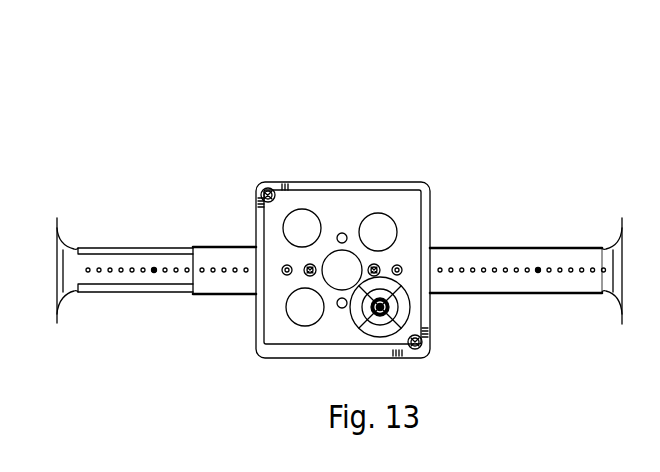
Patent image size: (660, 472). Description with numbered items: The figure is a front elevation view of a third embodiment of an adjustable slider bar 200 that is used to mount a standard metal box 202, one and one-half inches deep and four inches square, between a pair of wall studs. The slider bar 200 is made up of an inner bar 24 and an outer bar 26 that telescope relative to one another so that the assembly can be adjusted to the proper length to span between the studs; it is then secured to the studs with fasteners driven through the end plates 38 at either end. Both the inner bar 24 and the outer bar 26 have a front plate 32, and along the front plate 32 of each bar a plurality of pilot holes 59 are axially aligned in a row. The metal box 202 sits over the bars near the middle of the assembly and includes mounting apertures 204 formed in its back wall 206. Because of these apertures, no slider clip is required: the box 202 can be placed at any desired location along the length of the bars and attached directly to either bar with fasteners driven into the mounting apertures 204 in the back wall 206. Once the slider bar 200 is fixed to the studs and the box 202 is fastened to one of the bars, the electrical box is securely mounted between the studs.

The adjustable slider bar 200 is at (249, 156).
The metal box 202 is at (375, 181).
The mounting apertures 204 is at (342, 309).
The back wall 206 is at (362, 223).
The inner bar 24 is at (140, 247).
The outer bar 26 is at (515, 247).
The front plate 32 is at (100, 263).
The end plates 38 is at (58, 308).
The pilot holes 59 is at (154, 273).